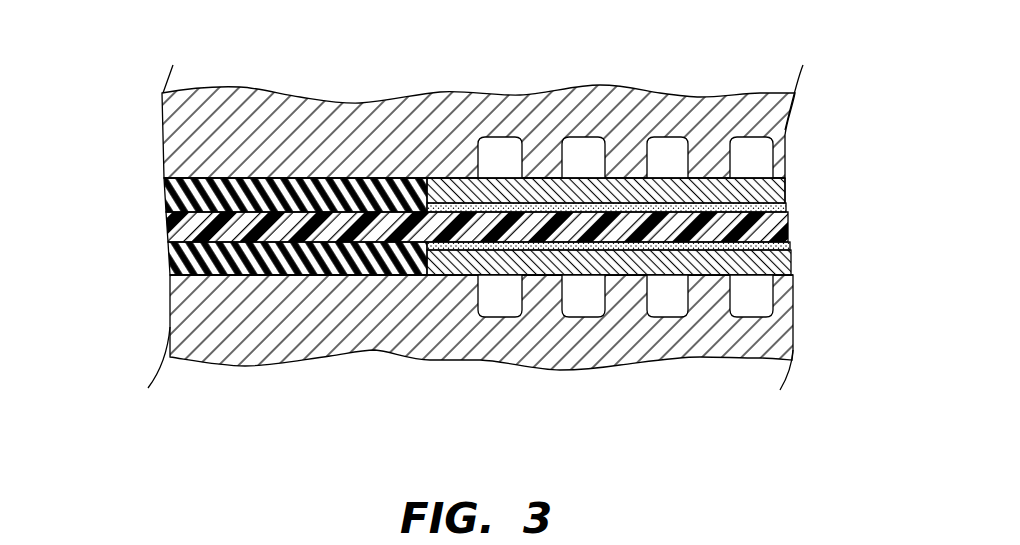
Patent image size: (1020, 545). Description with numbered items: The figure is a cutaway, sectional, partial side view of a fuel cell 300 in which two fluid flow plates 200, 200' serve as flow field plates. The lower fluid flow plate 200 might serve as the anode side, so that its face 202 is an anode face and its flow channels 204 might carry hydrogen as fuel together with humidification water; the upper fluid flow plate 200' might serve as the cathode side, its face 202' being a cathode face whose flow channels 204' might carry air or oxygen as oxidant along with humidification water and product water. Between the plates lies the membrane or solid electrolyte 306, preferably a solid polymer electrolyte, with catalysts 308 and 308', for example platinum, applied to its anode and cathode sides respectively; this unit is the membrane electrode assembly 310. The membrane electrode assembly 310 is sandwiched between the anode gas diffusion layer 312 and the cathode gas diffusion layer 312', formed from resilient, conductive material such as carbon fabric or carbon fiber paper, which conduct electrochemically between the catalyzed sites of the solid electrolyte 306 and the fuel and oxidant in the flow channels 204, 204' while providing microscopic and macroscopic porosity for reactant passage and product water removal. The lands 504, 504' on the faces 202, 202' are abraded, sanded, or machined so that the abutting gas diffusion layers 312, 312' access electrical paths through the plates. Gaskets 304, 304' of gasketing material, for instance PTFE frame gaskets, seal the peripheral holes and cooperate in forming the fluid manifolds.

The fuel cell 300 is at (900, 41).
The fluid flow plate 200' is at (478, 98).
The face 202' is at (474, 98).
The flow channels 204' is at (625, 98).
The lands 504' is at (522, 98).
The fluid flow plate 200 is at (481, 357).
The face 202 is at (481, 357).
The flow channels 204 is at (625, 357).
The lands 504 is at (519, 357).
The gasket 304' is at (234, 178).
The gasket 304 is at (237, 272).
The solid electrolyte 306 is at (786, 220).
The catalyst 308' is at (667, 189).
The catalyst 308 is at (664, 258).
The membrane electrode assembly 310 is at (800, 237).
The cathode gas diffusion layer 312' is at (845, 159).
The anode gas diffusion layer 312 is at (664, 279).